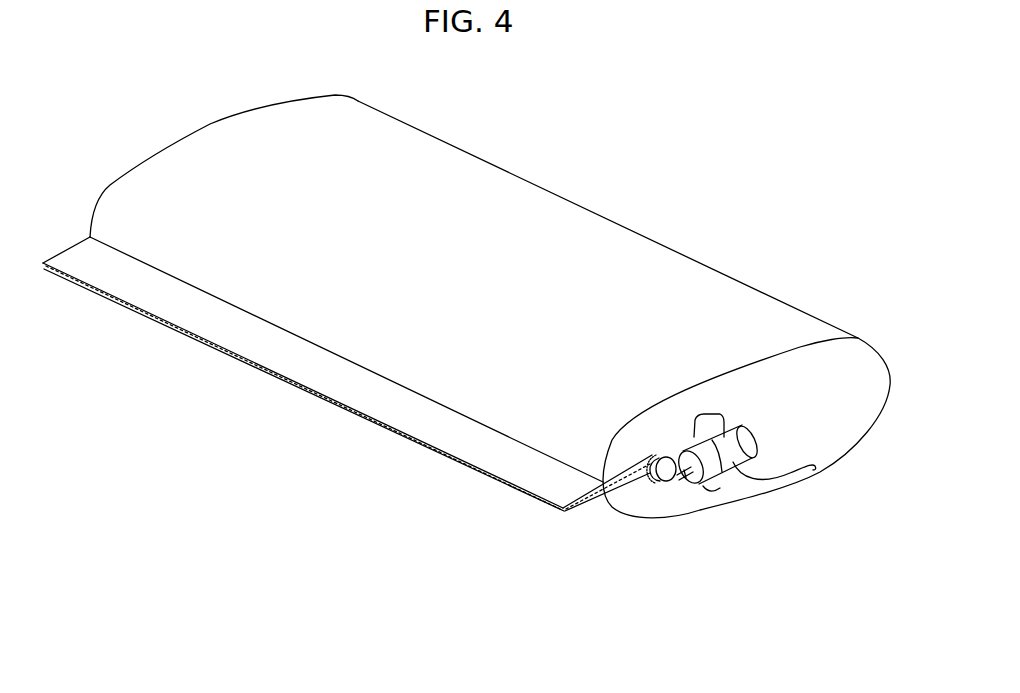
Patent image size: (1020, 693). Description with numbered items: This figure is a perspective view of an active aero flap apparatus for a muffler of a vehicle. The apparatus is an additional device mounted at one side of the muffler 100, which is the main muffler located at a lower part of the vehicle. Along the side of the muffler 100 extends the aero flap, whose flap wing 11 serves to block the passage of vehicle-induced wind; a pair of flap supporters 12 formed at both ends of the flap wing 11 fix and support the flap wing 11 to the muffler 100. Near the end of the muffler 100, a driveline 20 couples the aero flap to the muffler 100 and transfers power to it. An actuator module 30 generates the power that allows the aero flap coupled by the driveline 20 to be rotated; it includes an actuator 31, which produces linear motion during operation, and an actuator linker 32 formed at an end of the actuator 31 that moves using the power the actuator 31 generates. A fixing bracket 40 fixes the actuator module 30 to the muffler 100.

The muffler 100 is at (559, 237).
The flap wing 11 is at (393, 408).
The flap supporter 12 is at (603, 493).
The driveline 20 is at (670, 481).
The actuator module 30 is at (741, 516).
The actuator 31 is at (693, 483).
The actuator linker 32 is at (718, 480).
The fixing bracket 40 is at (813, 468).